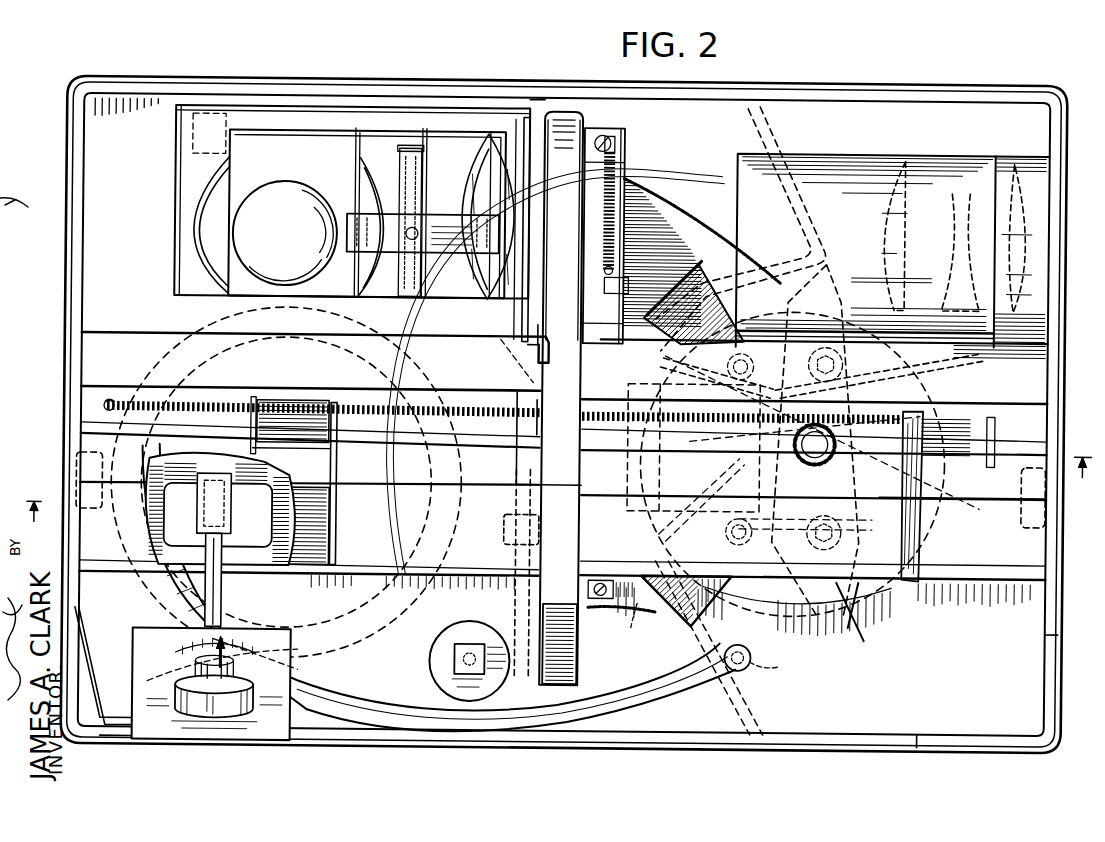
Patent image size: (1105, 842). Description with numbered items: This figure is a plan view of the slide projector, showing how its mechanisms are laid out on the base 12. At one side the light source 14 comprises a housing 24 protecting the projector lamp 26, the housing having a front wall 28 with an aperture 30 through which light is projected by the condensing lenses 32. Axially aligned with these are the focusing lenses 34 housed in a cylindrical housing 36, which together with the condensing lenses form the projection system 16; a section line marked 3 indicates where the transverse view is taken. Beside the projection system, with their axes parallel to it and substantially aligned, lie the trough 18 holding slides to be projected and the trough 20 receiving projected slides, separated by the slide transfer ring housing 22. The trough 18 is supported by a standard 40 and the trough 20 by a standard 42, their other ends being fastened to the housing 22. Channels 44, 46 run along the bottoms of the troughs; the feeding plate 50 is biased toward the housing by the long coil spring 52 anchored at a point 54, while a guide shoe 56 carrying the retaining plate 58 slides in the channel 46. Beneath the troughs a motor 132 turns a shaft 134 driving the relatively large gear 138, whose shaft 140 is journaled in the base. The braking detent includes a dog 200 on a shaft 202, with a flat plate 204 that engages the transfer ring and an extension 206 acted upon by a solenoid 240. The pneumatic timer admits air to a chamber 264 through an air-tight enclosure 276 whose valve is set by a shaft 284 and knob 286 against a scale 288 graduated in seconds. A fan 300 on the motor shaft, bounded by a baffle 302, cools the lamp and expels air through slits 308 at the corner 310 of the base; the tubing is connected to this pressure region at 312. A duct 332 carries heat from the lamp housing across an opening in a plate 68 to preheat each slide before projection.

The base 12 is at (1062, 100).
The light source 14 is at (289, 126).
The projection system 16 is at (815, 172).
The trough 18 is at (1030, 540).
The trough 20 is at (398, 548).
The slide transfer ring housing 22 is at (590, 663).
The housing 24 is at (173, 153).
The projector lamp 26 is at (268, 210).
The front wall 28 is at (538, 100).
The aperture 30 is at (527, 158).
The condensing lenses 32 is at (470, 165).
The focusing lenses 34 is at (1012, 165).
The cylindrical housing 36 is at (852, 153).
The standard 40 is at (1040, 492).
The standard 42 is at (77, 460).
The channel 44 is at (1040, 430).
The channel 46 is at (100, 408).
The feeding plate 50 is at (905, 593).
The coil spring 52 is at (438, 411).
The anchor point 54 is at (109, 405).
The guide shoe 56 is at (312, 420).
The retaining plate 58 is at (340, 518).
The plate 68 is at (607, 220).
The motor 132 is at (885, 380).
The shaft 134 is at (824, 463).
The gear 138 is at (634, 626).
The shaft 140 is at (564, 398).
The dog 200 is at (552, 684).
The shaft 202 is at (503, 518).
The flat plate 204 is at (549, 497).
The extension 206 is at (505, 625).
The solenoid 240 is at (137, 648).
The chamber 264 is at (325, 690).
The enclosure 276 is at (195, 552).
The shaft 284 is at (223, 575).
The knob 286 is at (185, 712).
The scale 288 is at (250, 648).
The fan 300 is at (870, 616).
The baffle 302 is at (720, 598).
The slits 308 is at (933, 743).
The corner 310 is at (1010, 648).
The tubing connection 312 is at (770, 662).
The duct 332 is at (360, 378).
The section line 3- 3 is at (559, 503).